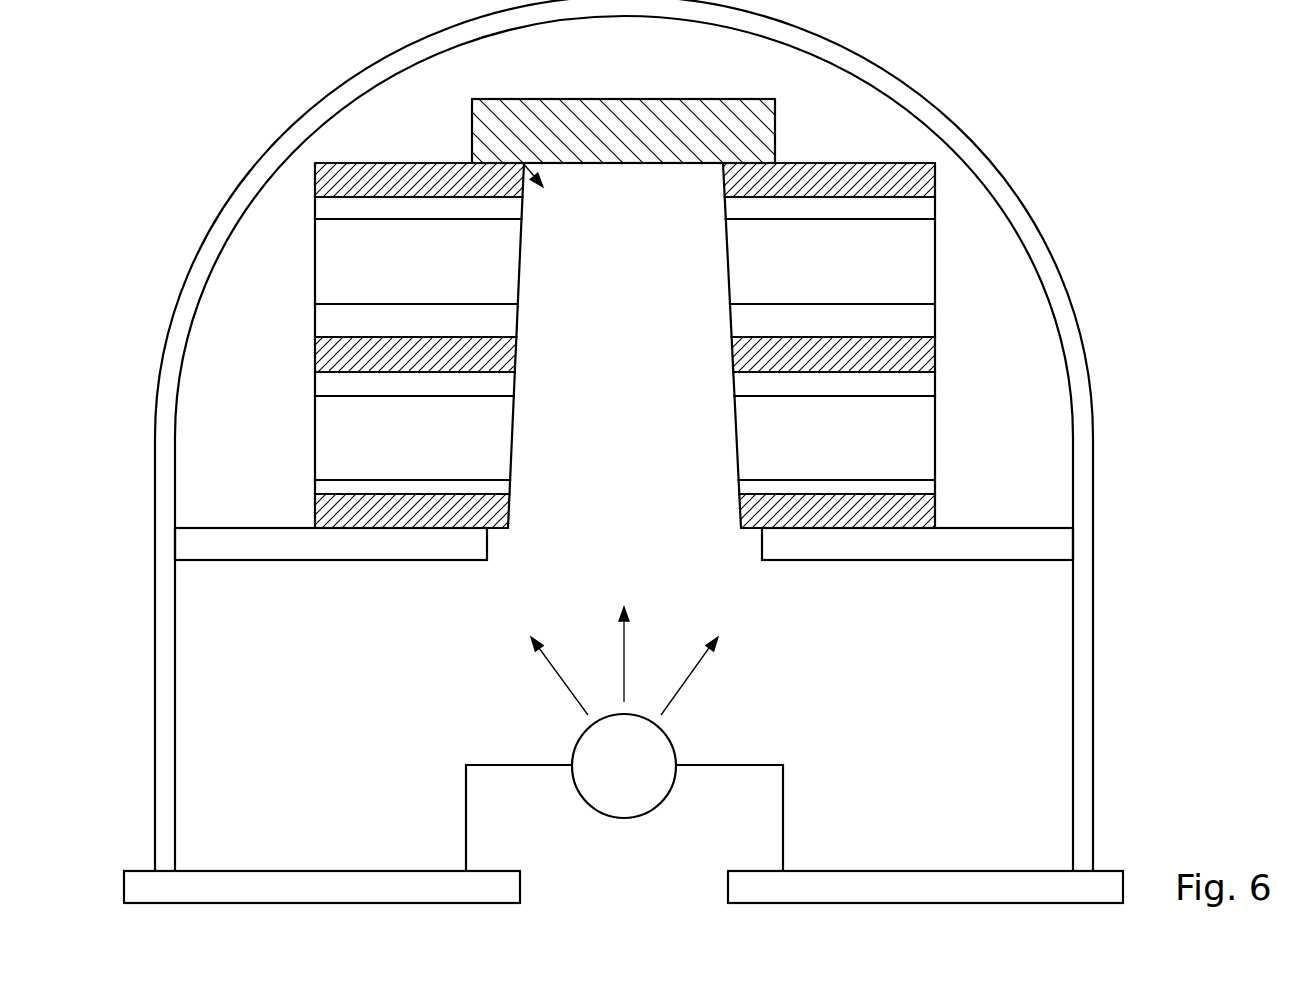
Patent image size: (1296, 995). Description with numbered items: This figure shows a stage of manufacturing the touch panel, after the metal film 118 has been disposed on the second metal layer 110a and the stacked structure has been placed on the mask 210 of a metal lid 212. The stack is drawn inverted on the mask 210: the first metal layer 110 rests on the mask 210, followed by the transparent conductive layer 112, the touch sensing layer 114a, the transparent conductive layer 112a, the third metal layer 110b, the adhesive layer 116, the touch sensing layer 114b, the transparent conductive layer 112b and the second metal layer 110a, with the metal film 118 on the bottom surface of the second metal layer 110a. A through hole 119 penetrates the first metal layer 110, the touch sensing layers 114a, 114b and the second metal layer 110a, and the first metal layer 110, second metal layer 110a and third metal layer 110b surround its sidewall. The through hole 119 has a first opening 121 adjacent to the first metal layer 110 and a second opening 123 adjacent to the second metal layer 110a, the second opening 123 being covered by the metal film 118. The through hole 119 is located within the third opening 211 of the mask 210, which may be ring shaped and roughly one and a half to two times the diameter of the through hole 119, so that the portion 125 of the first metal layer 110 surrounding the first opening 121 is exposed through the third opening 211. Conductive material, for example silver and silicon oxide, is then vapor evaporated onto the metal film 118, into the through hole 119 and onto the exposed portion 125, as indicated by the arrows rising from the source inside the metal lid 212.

The first metal layer 110 is at (935, 512).
The second metal layer 110a is at (935, 178).
The third metal layer 110b is at (935, 355).
The transparent conductive layer 112 is at (935, 486).
The transparent conductive layer 112a is at (935, 385).
The transparent conductive layer 112b is at (935, 208).
The touch sensing layer 114a is at (935, 432).
The touch sensing layer 114b is at (935, 262).
The adhesive layer 116 is at (935, 318).
The metal film 118 is at (510, 108).
The through hole 119 is at (520, 160).
The first opening 121 is at (557, 513).
The second opening 123 is at (712, 152).
The portion of the first metal layer 125 is at (496, 543).
The mask 210 is at (1053, 547).
The third opening 211 is at (729, 560).
The metal lid 212 is at (1083, 722).